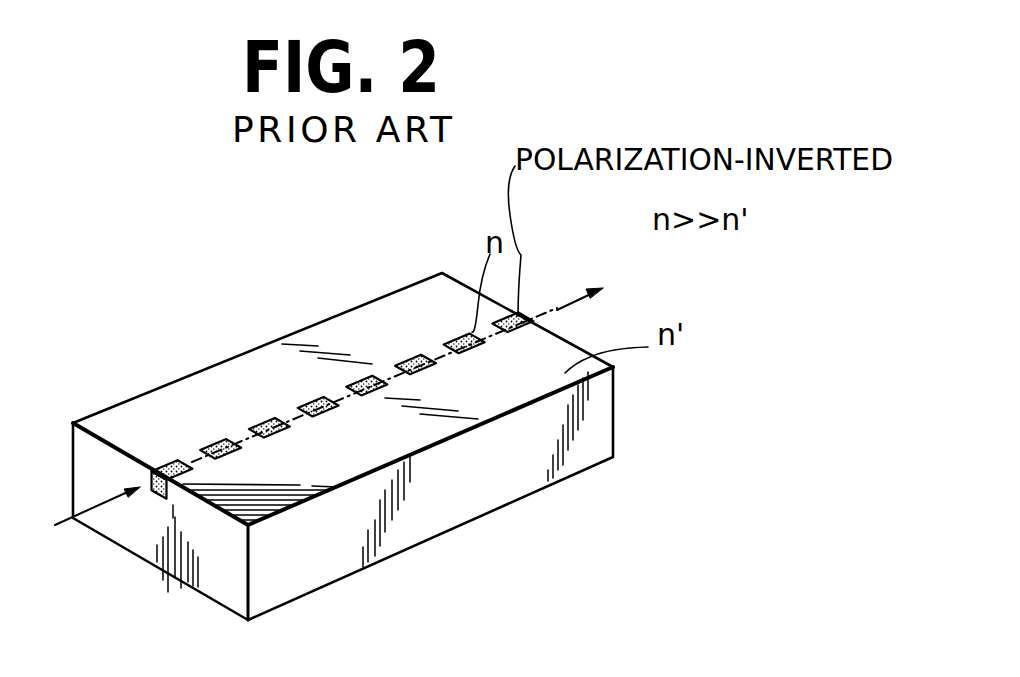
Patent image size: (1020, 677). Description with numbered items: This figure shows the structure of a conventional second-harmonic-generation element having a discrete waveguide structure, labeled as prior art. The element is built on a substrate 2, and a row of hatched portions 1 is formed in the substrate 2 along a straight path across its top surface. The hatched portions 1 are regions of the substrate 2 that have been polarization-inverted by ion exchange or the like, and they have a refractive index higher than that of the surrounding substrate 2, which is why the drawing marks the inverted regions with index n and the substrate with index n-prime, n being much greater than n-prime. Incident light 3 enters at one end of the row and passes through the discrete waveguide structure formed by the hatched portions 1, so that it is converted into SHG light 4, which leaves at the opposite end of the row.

The hatched portions 1 is at (160, 462).
The substrate 2 is at (430, 293).
The incident light 3 is at (70, 519).
The SHG light 4 is at (575, 298).